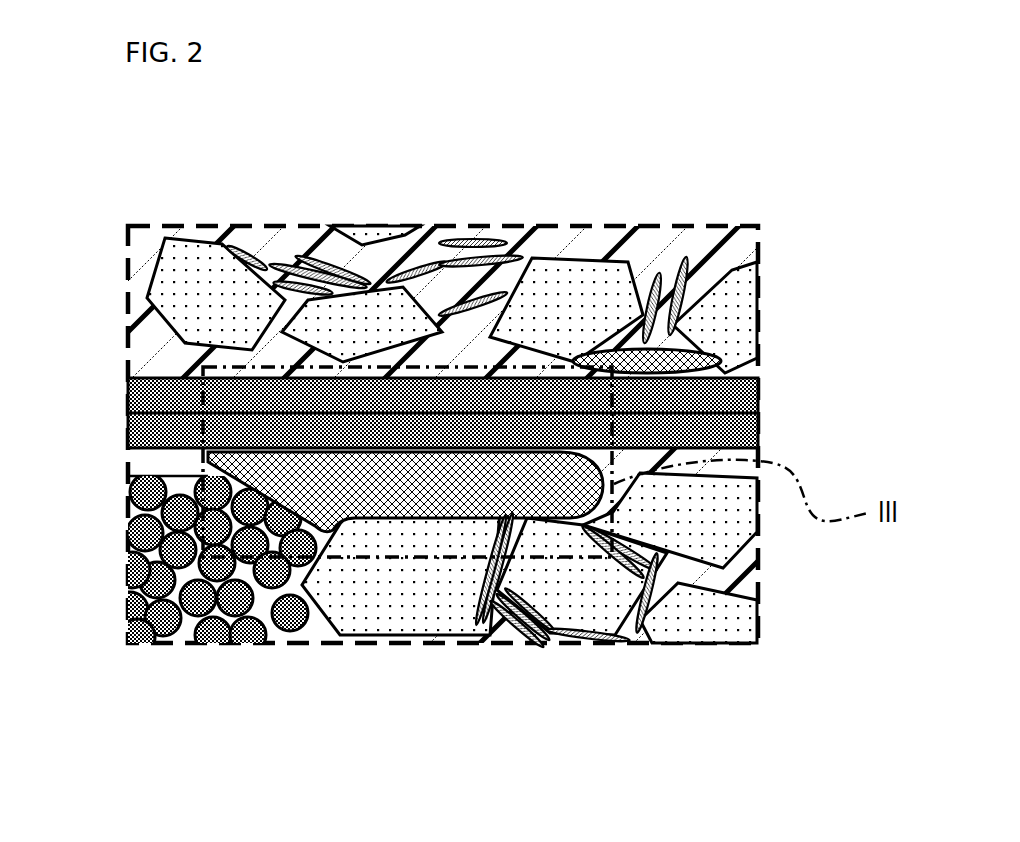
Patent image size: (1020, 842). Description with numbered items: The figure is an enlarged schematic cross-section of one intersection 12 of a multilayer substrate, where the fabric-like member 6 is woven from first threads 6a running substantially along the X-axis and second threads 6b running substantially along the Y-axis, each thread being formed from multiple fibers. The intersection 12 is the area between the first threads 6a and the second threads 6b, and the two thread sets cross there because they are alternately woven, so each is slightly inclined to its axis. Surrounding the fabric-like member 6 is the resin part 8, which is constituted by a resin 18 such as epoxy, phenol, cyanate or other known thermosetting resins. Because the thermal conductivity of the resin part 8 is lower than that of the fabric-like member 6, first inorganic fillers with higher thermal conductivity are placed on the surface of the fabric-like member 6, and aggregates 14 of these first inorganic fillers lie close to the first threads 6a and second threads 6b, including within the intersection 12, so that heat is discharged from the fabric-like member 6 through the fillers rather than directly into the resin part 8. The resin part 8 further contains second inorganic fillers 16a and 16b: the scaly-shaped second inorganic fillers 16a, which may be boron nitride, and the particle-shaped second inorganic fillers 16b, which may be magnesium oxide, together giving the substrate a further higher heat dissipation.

The fabric-like member 6 is at (461, 513).
The first threads 6a is at (733, 393).
The second threads 6b is at (128, 620).
The resin part 8 is at (610, 238).
The intersection 12 is at (752, 208).
The aggregates of the first inorganic fillers 14 is at (208, 452).
The second inorganic fillers 16a is at (452, 238).
The second inorganic fillers 16b is at (438, 618).
The resin 18 is at (140, 231).